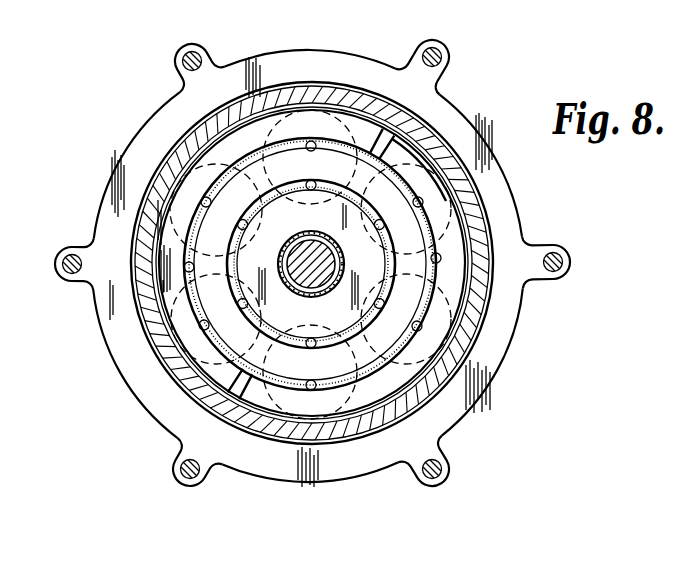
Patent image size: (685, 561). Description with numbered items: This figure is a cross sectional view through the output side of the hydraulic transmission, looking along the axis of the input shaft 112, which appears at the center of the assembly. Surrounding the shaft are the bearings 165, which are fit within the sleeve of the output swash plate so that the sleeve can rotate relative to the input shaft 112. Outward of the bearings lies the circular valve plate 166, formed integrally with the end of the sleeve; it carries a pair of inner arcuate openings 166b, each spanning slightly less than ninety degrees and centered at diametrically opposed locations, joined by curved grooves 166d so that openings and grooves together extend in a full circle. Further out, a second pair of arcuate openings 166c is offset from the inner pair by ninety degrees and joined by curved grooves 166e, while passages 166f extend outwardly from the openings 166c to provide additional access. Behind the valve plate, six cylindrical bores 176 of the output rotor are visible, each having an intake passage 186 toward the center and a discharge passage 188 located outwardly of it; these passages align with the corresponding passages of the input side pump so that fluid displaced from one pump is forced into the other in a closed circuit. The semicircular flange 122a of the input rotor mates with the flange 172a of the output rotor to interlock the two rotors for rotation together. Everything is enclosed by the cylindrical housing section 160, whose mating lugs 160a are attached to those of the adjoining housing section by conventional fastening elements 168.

The input shaft 112 is at (296, 268).
The semicircular flange 122a is at (221, 124).
The cylindrical housing section 160 is at (479, 136).
The mating lug 160a is at (208, 56).
The bearing 165 is at (298, 291).
The valve plate 166 is at (374, 122).
The inner arcuate opening 166b is at (283, 204).
The outer arcuate opening 166c is at (163, 326).
The curved groove 166d is at (368, 204).
The curved groove 166e is at (284, 141).
The passage 166f is at (393, 139).
The fastening element 168 is at (442, 57).
The flange 172a is at (390, 412).
The cylindrical bore 176 is at (285, 441).
The intake passage 186 is at (244, 230).
The discharge passage 188 is at (312, 155).